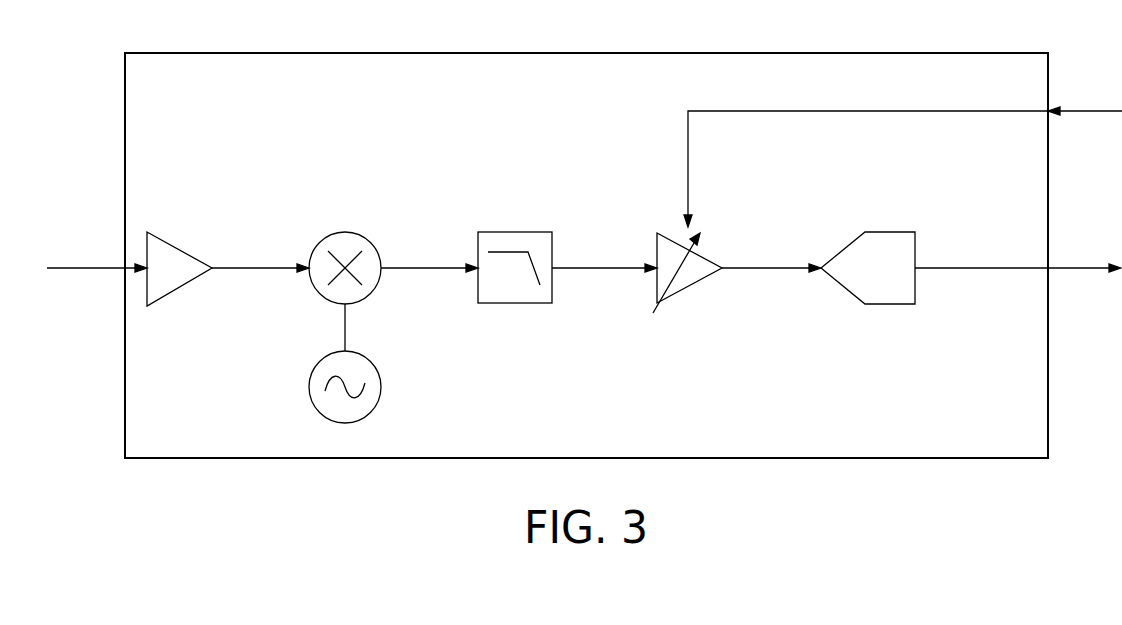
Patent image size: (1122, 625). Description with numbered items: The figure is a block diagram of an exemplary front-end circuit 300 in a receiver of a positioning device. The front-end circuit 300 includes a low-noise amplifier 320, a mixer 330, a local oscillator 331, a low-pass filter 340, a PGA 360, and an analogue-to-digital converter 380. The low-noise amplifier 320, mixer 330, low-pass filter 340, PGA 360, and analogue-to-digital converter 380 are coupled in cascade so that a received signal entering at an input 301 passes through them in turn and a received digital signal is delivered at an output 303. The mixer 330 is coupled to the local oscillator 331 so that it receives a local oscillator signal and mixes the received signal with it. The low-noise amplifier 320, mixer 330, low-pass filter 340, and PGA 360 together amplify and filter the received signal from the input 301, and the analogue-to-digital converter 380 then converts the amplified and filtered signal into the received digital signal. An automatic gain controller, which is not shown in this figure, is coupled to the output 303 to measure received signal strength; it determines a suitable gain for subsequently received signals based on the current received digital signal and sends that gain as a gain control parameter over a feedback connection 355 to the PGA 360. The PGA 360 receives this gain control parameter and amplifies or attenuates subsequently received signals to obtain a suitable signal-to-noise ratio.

The front-end circuit 300 is at (186, 52).
The input 301 is at (90, 265).
The output 303 is at (1073, 266).
The low-noise amplifier 320 is at (178, 250).
The mixer 330 is at (345, 232).
The local oscillator 331 is at (372, 355).
The low-pass filter 340 is at (517, 232).
The feedback connection 355 is at (1073, 110).
The PGA 360 is at (690, 289).
The analogue-to-digital converter 380 is at (890, 304).